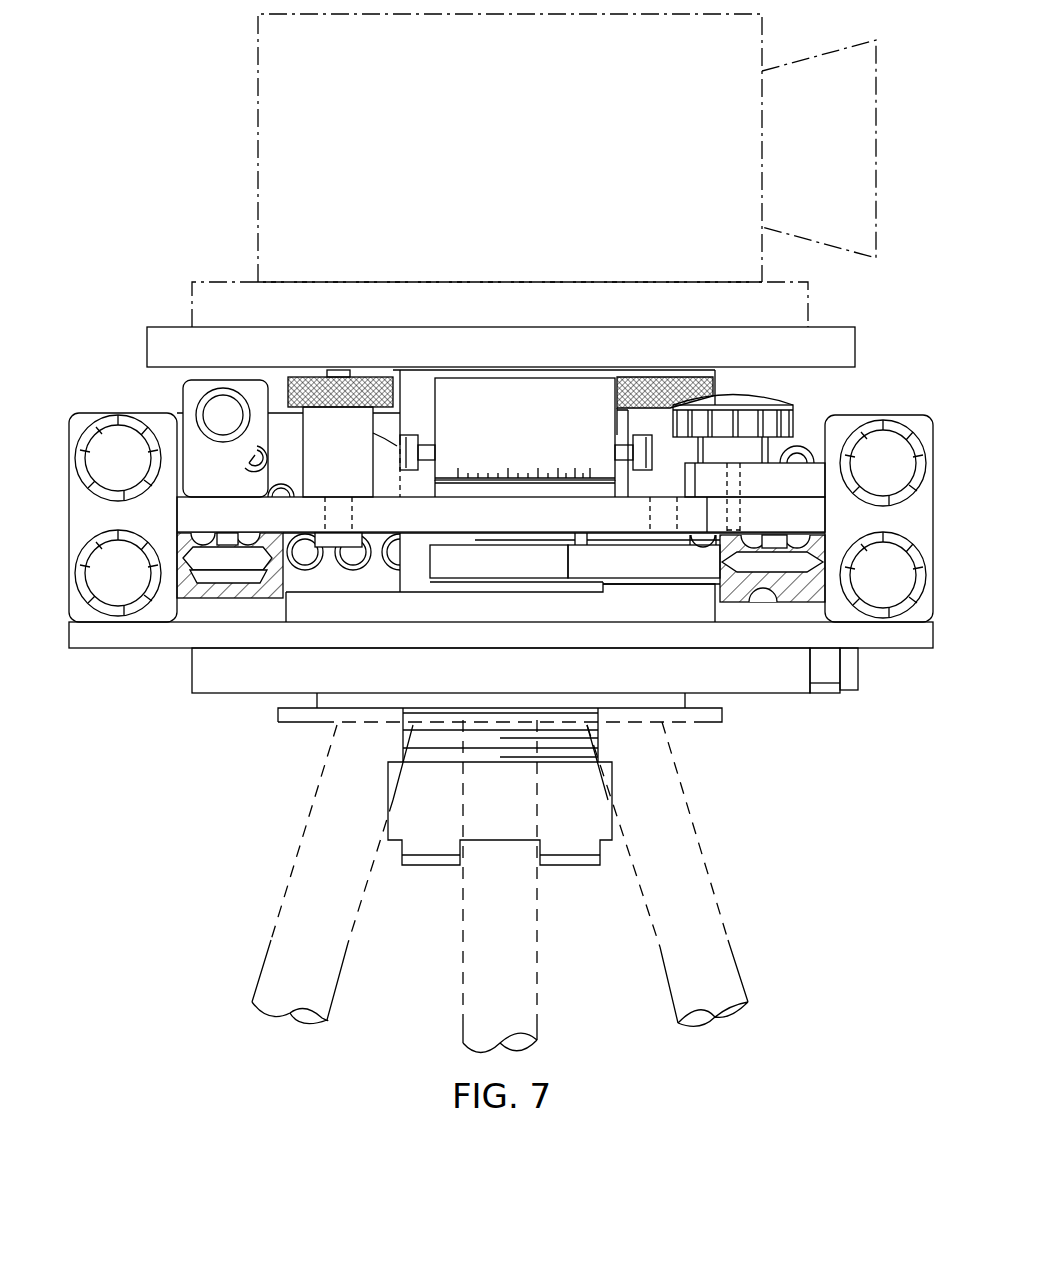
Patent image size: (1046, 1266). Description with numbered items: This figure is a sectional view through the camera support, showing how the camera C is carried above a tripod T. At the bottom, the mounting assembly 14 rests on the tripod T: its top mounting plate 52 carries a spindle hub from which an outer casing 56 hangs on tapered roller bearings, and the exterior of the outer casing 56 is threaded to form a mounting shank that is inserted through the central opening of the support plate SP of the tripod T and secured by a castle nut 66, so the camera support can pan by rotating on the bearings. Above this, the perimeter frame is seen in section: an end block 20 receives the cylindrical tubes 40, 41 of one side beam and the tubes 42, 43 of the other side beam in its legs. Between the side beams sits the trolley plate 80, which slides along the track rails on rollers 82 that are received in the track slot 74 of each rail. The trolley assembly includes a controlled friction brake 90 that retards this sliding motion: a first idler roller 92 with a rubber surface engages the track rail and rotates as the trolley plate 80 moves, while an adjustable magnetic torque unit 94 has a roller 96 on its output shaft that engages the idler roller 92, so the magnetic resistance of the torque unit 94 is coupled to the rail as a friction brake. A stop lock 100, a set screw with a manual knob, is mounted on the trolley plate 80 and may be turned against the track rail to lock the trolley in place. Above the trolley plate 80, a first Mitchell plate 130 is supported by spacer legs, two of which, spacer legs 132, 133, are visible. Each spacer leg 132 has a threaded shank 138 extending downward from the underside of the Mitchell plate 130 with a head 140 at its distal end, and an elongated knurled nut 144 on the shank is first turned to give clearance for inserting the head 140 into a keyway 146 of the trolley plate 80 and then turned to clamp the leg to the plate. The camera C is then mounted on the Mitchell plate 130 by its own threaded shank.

The camera C is at (256, 51).
The first Mitchell plate 130 is at (147, 345).
The end block 20 is at (90, 396).
The tube 42 is at (136, 418).
The tube 43 is at (118, 614).
The tube 40 is at (893, 420).
The tube 41 is at (896, 615).
The mounting assembly 14 is at (250, 708).
The top mounting plate 52 is at (873, 645).
The support plate SP is at (712, 716).
The outer casing 56 is at (402, 730).
The castle nut 66 is at (428, 847).
The tripod T is at (293, 855).
The spacer leg 132 is at (292, 437).
The elongated knurled nut 144 is at (302, 362).
The threaded shank 138 is at (352, 372).
The adjustable magnetic torque unit 94 is at (466, 393).
The controlled friction brake 90 is at (527, 377).
The spacer leg 133 is at (724, 378).
The stop lock 100 is at (760, 396).
The trolley plate 80 is at (205, 510).
The keyway 146 is at (324, 520).
The track slot 74 is at (758, 582).
The roller 82 is at (790, 568).
The head 140 is at (343, 563).
The roller 96 is at (478, 570).
The first idler roller 92 is at (657, 570).